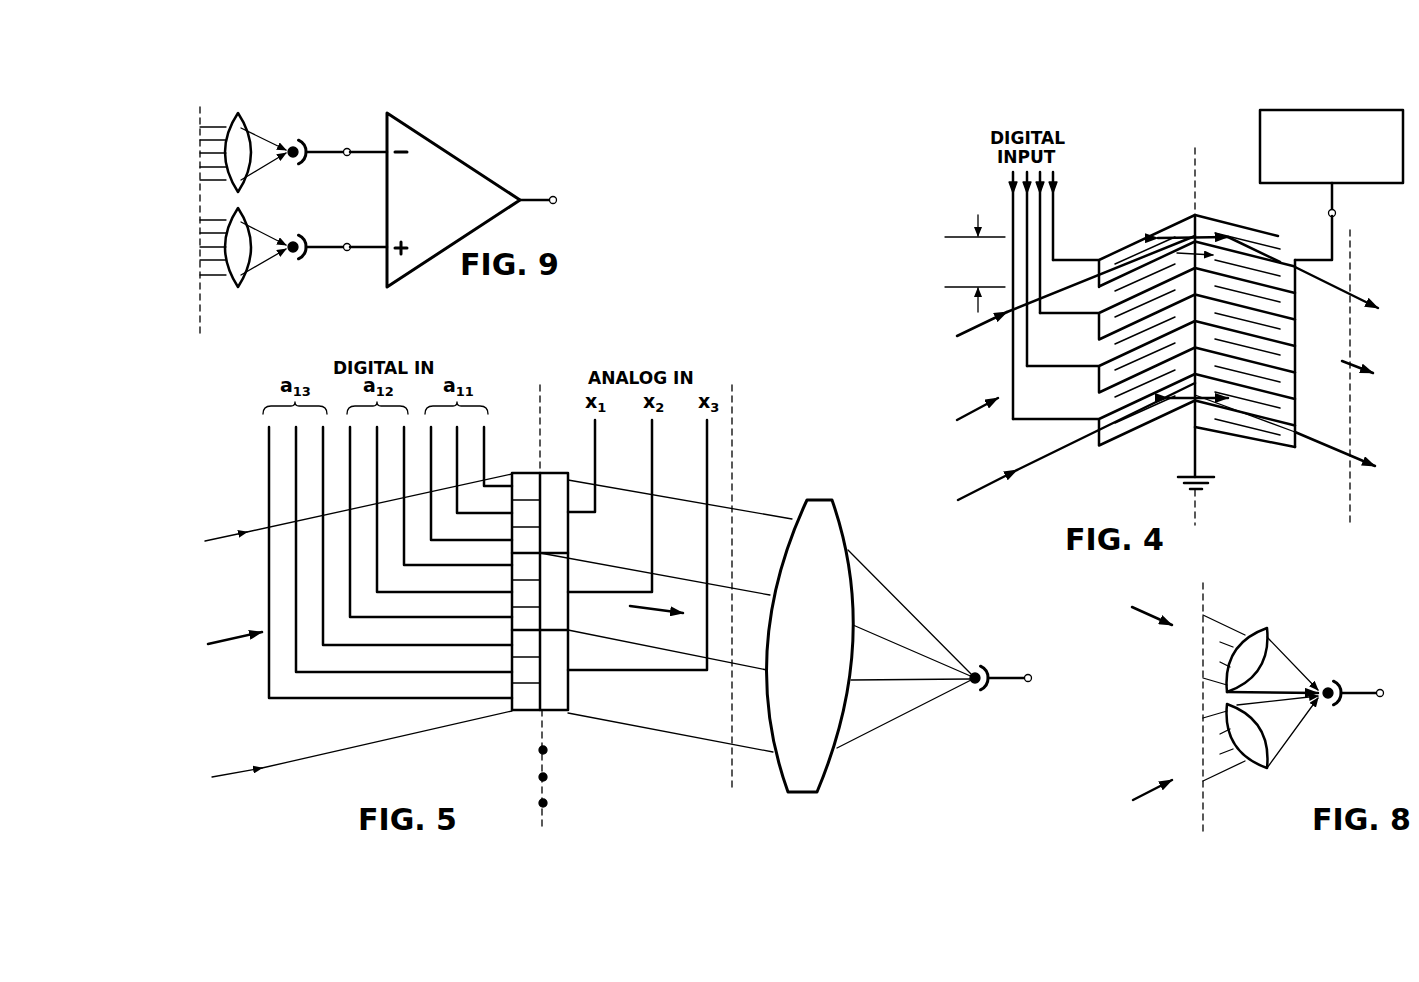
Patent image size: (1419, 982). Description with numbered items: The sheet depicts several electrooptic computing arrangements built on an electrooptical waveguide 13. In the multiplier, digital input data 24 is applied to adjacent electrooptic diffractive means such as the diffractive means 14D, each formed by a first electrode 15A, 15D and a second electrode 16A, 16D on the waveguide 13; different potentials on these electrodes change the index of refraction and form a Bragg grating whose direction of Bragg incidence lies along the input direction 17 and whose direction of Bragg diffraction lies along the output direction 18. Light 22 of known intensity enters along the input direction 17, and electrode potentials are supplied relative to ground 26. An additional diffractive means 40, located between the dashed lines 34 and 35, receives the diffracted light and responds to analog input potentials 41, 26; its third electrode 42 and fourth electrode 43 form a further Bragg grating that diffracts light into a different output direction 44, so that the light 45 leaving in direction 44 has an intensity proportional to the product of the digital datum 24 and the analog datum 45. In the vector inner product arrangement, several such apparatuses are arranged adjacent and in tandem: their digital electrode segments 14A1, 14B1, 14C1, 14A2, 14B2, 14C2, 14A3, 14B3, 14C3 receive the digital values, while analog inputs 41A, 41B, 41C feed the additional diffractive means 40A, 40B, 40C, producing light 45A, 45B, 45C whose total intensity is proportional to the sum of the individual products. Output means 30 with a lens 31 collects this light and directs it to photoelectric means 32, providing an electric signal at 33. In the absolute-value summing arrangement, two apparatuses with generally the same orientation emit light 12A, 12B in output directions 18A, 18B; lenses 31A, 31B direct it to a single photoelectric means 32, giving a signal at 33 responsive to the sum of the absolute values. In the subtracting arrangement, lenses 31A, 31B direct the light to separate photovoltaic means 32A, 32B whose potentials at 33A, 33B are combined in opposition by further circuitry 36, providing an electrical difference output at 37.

In FIG. 8, the light 12A is at (1210, 656).
In FIG. 8, the light 12B is at (1213, 766).
In FIG. 5, the electrooptical waveguide 13 is at (525, 746).
In FIG. 4, the electrooptical waveguide 13 is at (1162, 482).
In FIG. 5, the digital electrode segment 14A1 is at (527, 542).
In FIG. 5, the digital electrode segment 14B1 is at (527, 515).
In FIG. 5, the digital electrode segment 14C1 is at (527, 488).
In FIG. 5, the digital electrode segment 14A2 is at (527, 619).
In FIG. 5, the digital electrode segment 14B2 is at (527, 594).
In FIG. 5, the digital electrode segment 14C2 is at (527, 568).
In FIG. 5, the digital electrode segment 14A3 is at (527, 700).
In FIG. 5, the digital electrode segment 14B3 is at (527, 673).
In FIG. 5, the digital electrode segment 14C3 is at (527, 646).
In FIG. 4, the electrooptic diffractive means 14D is at (975, 263).
In FIG. 4, the first electrode 15A is at (1122, 450).
In FIG. 4, the first electrode 15D is at (1183, 222).
In FIG. 4, the second electrode 16A is at (1112, 440).
In FIG. 4, the second electrode 16D is at (1140, 254).
In FIG. 5, the predetermined input direction 17 is at (220, 650).
In FIG. 4, the predetermined input direction 17 is at (980, 408).
In FIG. 4, the predetermined output direction 18 is at (1215, 260).
In FIG. 8, the output direction 18A is at (1132, 607).
In FIG. 8, the output direction 18B is at (1133, 800).
In FIG. 5, the light 22 is at (240, 594).
In FIG. 4, the light 22 is at (987, 379).
In FIG. 4, the digital input data 24 is at (1065, 155).
In FIG. 4, the ground potential 26 is at (1199, 472).
In FIG. 5, the output means 30 is at (798, 477).
In FIG. 5, the lens 31 is at (822, 515).
In FIG. 9, the lens 31A is at (238, 127).
In FIG. 8, the lens 31A is at (1257, 640).
In FIG. 9, the lens 31B is at (237, 268).
In FIG. 8, the lens 31B is at (1257, 765).
In FIG. 5, the photoelectric means 32 is at (988, 660).
In FIG. 8, the photoelectric means 32 is at (1337, 675).
In FIG. 9, the photovoltaic means 32A is at (308, 133).
In FIG. 9, the photovoltaic means 32B is at (305, 260).
In FIG. 5, the electric signal output 33 is at (1026, 683).
In FIG. 8, the electric signal output 33 is at (1378, 697).
In FIG. 9, the electric signal output 33A is at (348, 156).
In FIG. 9, the electric signal output 33B is at (349, 244).
In FIG. 5, the dashed line 34 is at (539, 397).
In FIG. 4, the dashed line 34 is at (1197, 160).
In FIG. 9, the dashed line 35 is at (205, 112).
In FIG. 5, the dashed line 35 is at (733, 398).
In FIG. 4, the dashed line 35 is at (1352, 250).
In FIG. 8, the dashed line 35 is at (1207, 588).
In FIG. 9, the further circuitry 36 is at (447, 170).
In FIG. 9, the electrical difference output 37 is at (578, 165).
In FIG. 4, the additional electrooptic diffractive means 40 is at (1238, 225).
In FIG. 5, the additional diffractive means 40A is at (547, 531).
In FIG. 5, the additional diffractive means 40B is at (550, 614).
In FIG. 5, the additional diffractive means 40C is at (552, 690).
In FIG. 4, the analog input potential 41 is at (1340, 212).
In FIG. 5, the analog input terminal 41A is at (595, 445).
In FIG. 5, the analog input terminal 41B is at (652, 447).
In FIG. 5, the analog input terminal 41C is at (707, 447).
In FIG. 4, the third electrode 42 is at (1280, 454).
In FIG. 4, the fourth electrode 43 is at (1283, 259).
In FIG. 5, the different output direction 44 is at (640, 608).
In FIG. 4, the different output direction 44 is at (1342, 361).
In FIG. 4, the analog input / output light 45 is at (1260, 121).
In FIG. 5, the output light 45A is at (698, 544).
In FIG. 5, the output light 45B is at (616, 589).
In FIG. 5, the output light 45C is at (698, 707).